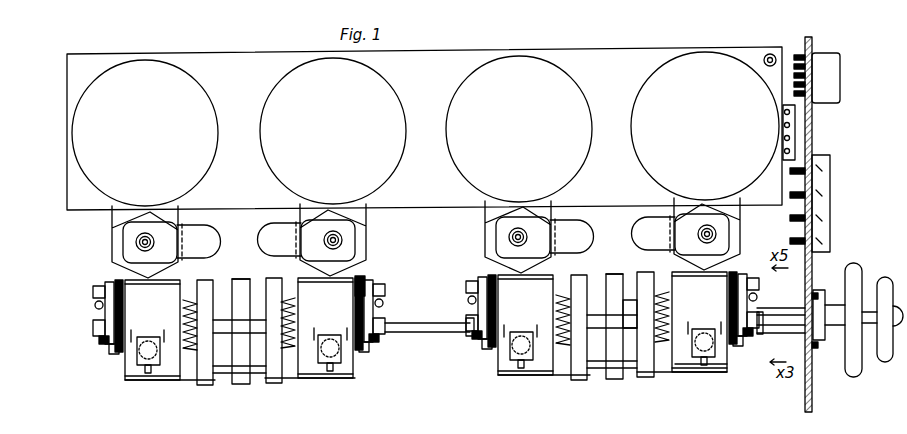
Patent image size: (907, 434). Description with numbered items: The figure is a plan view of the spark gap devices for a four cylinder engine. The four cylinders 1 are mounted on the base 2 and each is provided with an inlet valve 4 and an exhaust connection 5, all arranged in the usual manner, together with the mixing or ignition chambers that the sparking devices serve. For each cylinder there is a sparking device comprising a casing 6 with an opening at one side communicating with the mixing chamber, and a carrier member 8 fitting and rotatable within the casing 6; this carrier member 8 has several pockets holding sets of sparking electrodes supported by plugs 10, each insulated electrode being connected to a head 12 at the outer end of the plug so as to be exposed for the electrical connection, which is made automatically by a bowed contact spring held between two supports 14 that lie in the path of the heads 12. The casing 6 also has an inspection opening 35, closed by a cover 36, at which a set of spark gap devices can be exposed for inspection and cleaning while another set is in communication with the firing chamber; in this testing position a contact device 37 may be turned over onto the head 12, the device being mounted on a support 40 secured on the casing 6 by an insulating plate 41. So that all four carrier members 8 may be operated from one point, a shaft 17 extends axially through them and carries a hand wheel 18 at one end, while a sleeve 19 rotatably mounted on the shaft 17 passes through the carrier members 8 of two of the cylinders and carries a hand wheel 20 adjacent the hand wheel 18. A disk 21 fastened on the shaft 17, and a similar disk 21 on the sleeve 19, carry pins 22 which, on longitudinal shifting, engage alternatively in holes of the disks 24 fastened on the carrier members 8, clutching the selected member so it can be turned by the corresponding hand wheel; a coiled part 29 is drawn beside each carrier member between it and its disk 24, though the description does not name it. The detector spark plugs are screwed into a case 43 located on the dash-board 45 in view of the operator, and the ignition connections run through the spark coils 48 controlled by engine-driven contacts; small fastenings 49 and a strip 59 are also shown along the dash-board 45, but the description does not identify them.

The cylinder 1 is at (425, 129).
The base 2 is at (424, 128).
The inlet valve 4 is at (426, 238).
The exhaust connection 5 is at (112, 240).
The casing 6 is at (426, 326).
The carrier member 8 is at (357, 377).
The plug 10 is at (118, 356).
The head 12 is at (107, 343).
The support 14 is at (94, 292).
The shaft 17 is at (415, 334).
The hand wheel 18 is at (885, 363).
The sleeve 19 is at (628, 300).
The hand wheel 20 is at (854, 378).
The disk 21 is at (240, 285).
The pin 22 is at (240, 386).
The disk 24 is at (205, 386).
The spring 29 is at (296, 348).
The opening 35 is at (690, 372).
The cover 36 is at (148, 373).
The contact device 37 is at (103, 313).
The support 40 is at (470, 306).
The insulating plate 41 is at (366, 282).
The case 43 is at (830, 192).
The dash-board 45 is at (806, 400).
The spark coil 48 is at (840, 74).
The screw 49 is at (792, 222).
The bracket strip 59 is at (812, 160).